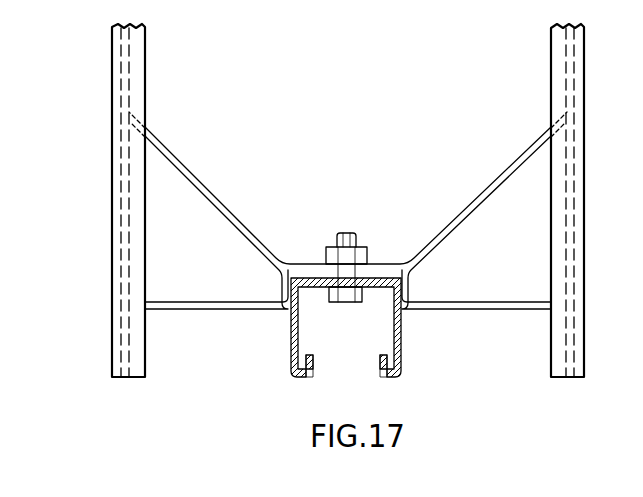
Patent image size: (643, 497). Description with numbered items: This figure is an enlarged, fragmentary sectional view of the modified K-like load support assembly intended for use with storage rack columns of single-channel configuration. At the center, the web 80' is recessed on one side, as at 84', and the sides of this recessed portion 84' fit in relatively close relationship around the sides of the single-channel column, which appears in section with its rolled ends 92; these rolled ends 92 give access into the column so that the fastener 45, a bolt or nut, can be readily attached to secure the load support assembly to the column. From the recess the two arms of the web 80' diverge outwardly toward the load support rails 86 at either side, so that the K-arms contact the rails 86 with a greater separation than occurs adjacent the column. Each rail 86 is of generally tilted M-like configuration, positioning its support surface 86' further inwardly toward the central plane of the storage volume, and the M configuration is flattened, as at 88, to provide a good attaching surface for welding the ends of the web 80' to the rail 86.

The load support rail 86 is at (350, 200).
The support surface 86' is at (348, 99).
The flattened portion 88 is at (124, 360).
The central web 80' is at (348, 218).
The recessed portion 84' is at (376, 327).
The rolled ends 92 is at (382, 378).
The fastener 45 is at (367, 251).